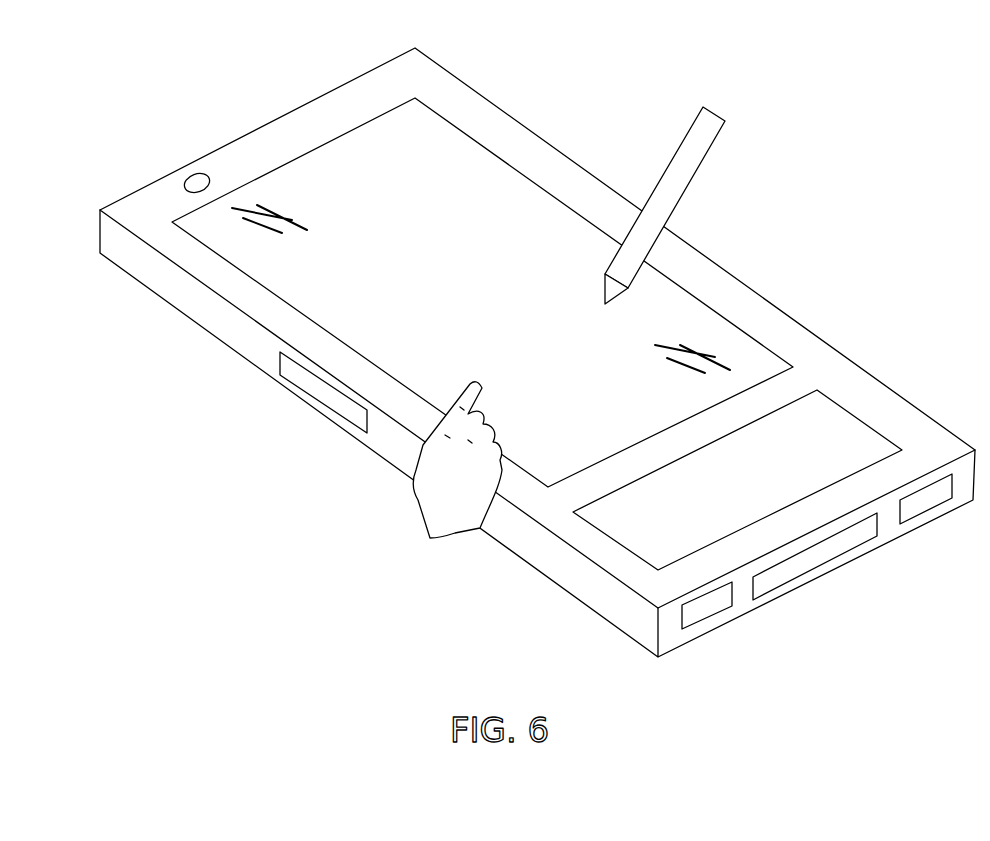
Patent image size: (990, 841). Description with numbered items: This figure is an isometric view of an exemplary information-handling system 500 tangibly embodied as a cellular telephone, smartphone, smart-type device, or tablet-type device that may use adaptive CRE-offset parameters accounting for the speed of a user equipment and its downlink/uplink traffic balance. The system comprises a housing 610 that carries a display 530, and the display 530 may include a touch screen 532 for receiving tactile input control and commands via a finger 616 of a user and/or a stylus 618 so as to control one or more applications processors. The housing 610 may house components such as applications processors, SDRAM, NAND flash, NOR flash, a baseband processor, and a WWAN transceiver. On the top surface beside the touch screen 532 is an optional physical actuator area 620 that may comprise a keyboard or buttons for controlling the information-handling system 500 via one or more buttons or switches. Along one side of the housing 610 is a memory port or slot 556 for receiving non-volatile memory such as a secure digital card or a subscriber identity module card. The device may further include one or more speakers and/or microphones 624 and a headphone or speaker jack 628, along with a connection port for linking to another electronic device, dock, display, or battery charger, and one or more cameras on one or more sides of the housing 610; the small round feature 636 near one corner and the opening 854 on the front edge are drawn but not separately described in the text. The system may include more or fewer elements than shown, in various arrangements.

The information-handling system 500 is at (537, 345).
The housing 610 is at (355, 80).
The camera 636 is at (185, 172).
The headphone or speaker jack 628 is at (708, 618).
The display 530 is at (417, 162).
The touch screen 532 is at (513, 298).
The stylus 618 is at (685, 140).
The physical actuator area 620 is at (827, 438).
The finger 616 is at (472, 385).
The memory port or slot 556 is at (318, 388).
The connector port 854 is at (835, 560).
The speakers and/or microphones 624 is at (928, 510).